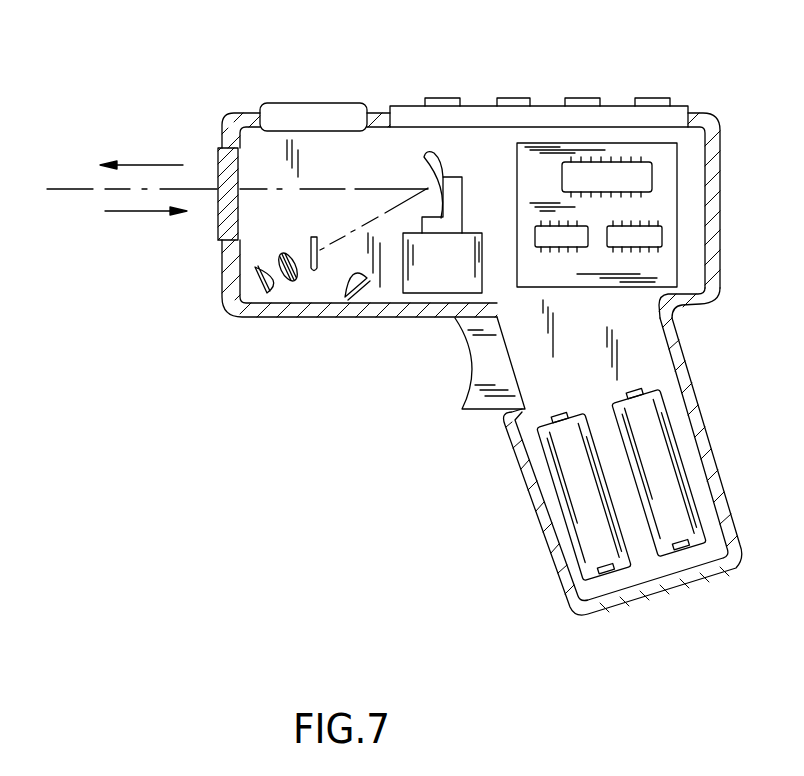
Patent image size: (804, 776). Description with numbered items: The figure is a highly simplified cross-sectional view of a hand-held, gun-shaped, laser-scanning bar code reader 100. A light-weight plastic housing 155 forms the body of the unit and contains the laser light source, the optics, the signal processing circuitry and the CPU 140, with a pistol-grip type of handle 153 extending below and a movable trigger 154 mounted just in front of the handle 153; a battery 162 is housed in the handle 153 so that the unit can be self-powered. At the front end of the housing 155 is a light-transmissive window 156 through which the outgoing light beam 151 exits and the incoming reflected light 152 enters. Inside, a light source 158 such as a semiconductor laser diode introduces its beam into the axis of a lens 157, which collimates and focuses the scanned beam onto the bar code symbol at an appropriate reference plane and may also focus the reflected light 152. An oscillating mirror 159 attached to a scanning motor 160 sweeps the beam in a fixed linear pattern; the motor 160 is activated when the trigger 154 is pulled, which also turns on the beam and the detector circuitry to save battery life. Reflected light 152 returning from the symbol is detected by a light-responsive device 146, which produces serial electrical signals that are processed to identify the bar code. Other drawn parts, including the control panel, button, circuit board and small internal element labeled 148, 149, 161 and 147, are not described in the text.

The bar code reader 100 is at (332, 477).
The CPU 140 is at (568, 170).
The light-responsive device 146 is at (253, 285).
The aperture slit 147 is at (312, 273).
The display panel 148 is at (622, 110).
The push button 149 is at (282, 110).
The outgoing light beam 151 is at (135, 163).
The reflected light 152 is at (147, 212).
The handle 153 is at (530, 515).
The trigger 154 is at (453, 407).
The housing 155 is at (720, 237).
The light-transmissive window 156 is at (218, 167).
The lens 157 is at (295, 273).
The light source 158 is at (363, 288).
The oscillating mirror 159 is at (437, 150).
The scanning motor 160 is at (450, 287).
The circuit board 161 is at (680, 177).
The battery 162 is at (657, 390).